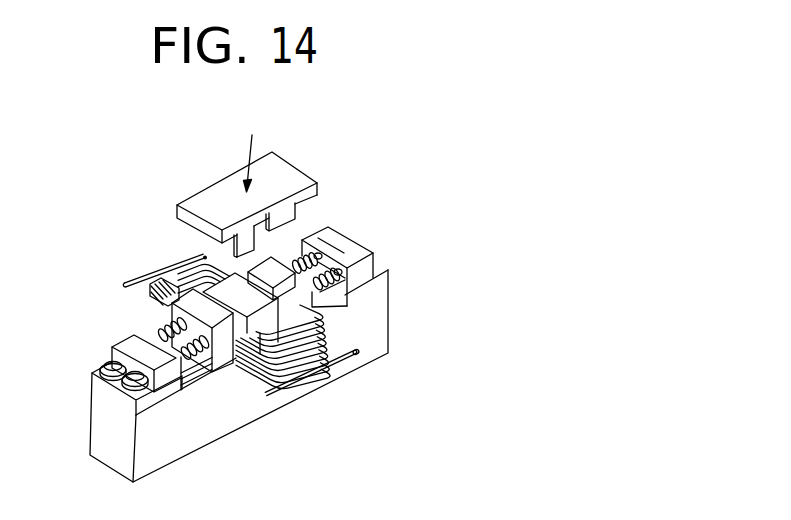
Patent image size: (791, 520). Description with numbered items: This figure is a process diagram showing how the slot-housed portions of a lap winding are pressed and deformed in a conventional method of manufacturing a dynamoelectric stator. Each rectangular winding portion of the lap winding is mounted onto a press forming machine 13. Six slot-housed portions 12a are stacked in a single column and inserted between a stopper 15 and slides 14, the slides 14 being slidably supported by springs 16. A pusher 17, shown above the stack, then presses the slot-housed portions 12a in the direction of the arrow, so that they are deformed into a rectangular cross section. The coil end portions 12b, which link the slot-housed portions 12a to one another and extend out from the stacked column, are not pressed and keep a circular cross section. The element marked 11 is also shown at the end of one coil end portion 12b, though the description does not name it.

The lead wire end 11 is at (359, 358).
The slot-housed portion 12a is at (152, 298).
The coil end portion 12b is at (303, 367).
The press forming machine 13 is at (397, 286).
The slide 14 is at (224, 356).
The stopper 15 is at (258, 377).
The spring 16 is at (208, 365).
The pusher 17 is at (291, 172).